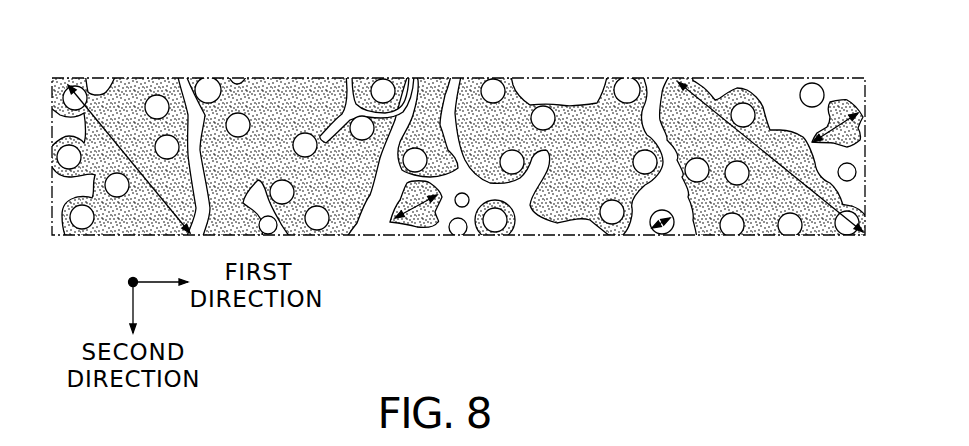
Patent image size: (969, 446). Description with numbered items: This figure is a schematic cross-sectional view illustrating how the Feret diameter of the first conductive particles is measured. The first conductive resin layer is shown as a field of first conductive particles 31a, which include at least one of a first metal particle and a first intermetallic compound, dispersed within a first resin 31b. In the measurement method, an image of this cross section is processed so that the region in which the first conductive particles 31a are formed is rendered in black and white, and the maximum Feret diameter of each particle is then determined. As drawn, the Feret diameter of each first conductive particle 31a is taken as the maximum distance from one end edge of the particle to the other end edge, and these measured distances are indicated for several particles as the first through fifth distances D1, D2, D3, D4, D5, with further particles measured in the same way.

The maximum Feret diameter distance D1 is at (108, 133).
The maximum Feret diameter distance D2 is at (388, 226).
The maximum Feret diameter distance D3 is at (658, 212).
The maximum Feret diameter distance D4 is at (710, 80).
The maximum Feret diameter distance D5 is at (843, 102).
The first conductive particle 31a is at (272, 84).
The first resin 31b is at (778, 103).